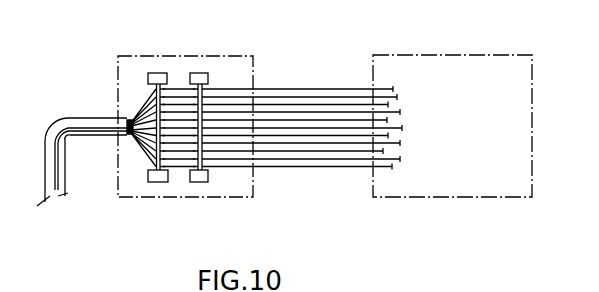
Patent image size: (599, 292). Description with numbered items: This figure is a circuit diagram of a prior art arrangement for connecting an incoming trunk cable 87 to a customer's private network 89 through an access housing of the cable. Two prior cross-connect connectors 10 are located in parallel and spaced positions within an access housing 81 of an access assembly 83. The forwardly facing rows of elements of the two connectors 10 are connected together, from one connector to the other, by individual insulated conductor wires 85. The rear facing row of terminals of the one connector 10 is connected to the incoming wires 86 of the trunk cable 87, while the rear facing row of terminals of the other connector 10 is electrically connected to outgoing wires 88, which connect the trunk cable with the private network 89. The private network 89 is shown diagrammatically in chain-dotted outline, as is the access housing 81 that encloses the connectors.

The cross-connect connector 10 is at (160, 160).
The access housing 81 is at (207, 55).
The access assembly 83 is at (229, 55).
The insulated conductor wires 85 is at (178, 91).
The incoming wires 86 is at (133, 115).
The trunk cable 87 is at (70, 117).
The outgoing wires 88 is at (304, 104).
The private network 89 is at (447, 55).